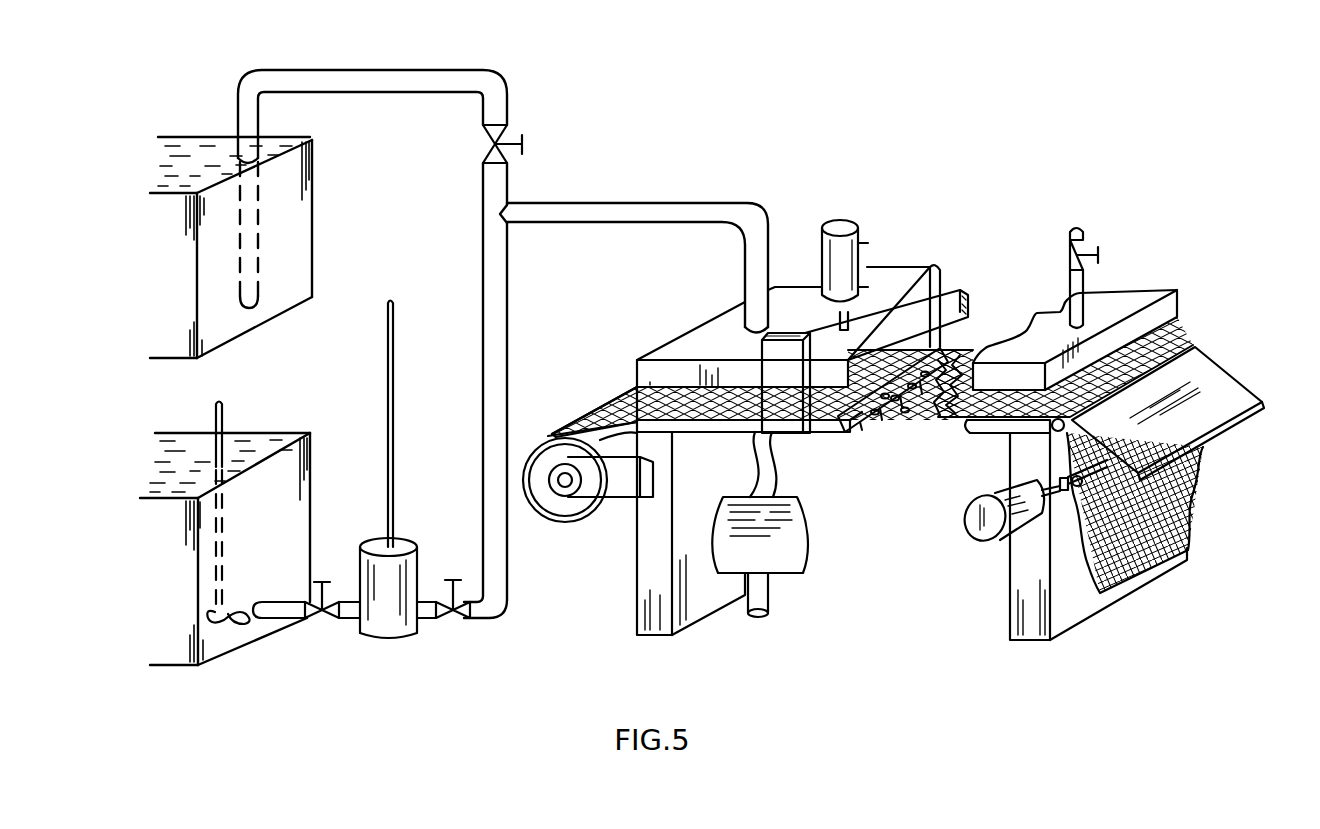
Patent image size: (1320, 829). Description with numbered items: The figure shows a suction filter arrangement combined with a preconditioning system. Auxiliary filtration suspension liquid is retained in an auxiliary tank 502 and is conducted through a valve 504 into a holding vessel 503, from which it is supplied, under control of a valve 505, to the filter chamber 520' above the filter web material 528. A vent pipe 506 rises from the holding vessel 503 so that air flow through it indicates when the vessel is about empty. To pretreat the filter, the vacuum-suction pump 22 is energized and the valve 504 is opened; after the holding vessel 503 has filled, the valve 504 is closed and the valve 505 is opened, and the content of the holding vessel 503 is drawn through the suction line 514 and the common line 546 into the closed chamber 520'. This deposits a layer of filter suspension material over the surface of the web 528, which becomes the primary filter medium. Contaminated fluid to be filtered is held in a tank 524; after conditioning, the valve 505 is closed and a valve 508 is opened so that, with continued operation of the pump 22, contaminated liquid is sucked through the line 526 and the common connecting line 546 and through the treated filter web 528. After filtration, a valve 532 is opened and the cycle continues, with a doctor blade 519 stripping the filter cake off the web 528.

The vacuum-suction pump 22 is at (793, 558).
The auxiliary tank 502 is at (293, 493).
The holding vessel 503 is at (408, 545).
The valve 504 is at (333, 618).
The valve 505 is at (457, 620).
The vent pipe 506 is at (393, 370).
The valve 508 is at (508, 128).
The suction line 514 is at (503, 327).
The doctor blade 519 is at (1212, 412).
The filter chamber 520' is at (923, 313).
The tank 524 is at (298, 210).
The line 526 is at (375, 72).
The filter web material 528 is at (1205, 512).
The valve 532 is at (1083, 255).
The common line 546 is at (628, 228).